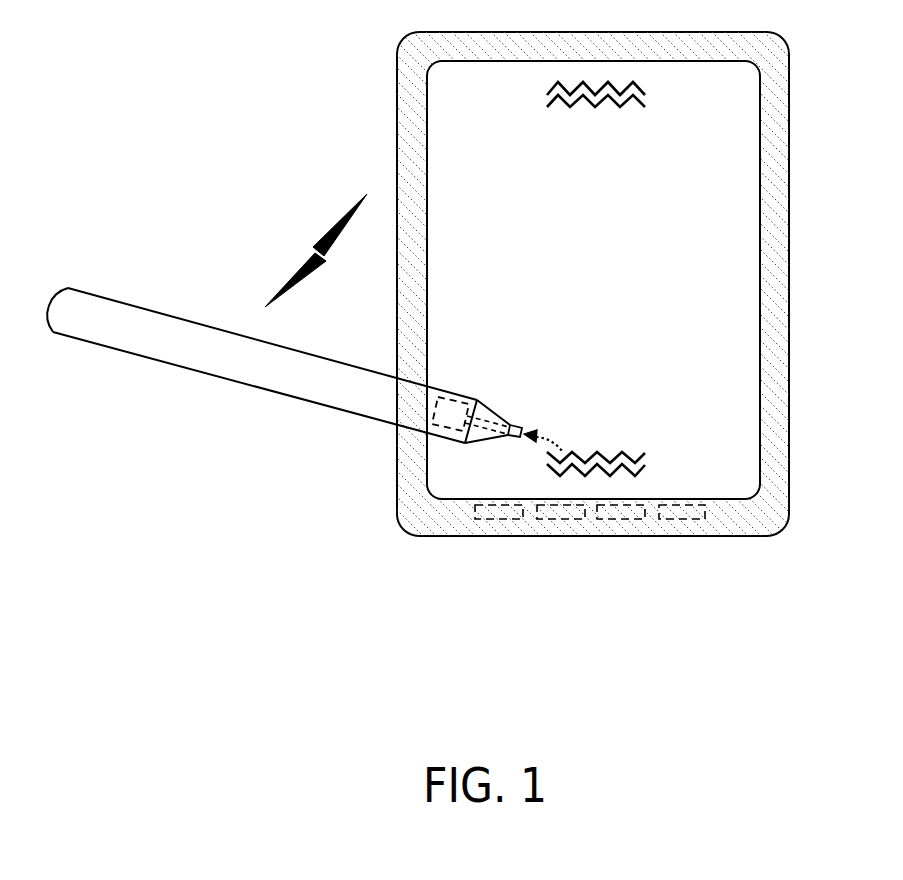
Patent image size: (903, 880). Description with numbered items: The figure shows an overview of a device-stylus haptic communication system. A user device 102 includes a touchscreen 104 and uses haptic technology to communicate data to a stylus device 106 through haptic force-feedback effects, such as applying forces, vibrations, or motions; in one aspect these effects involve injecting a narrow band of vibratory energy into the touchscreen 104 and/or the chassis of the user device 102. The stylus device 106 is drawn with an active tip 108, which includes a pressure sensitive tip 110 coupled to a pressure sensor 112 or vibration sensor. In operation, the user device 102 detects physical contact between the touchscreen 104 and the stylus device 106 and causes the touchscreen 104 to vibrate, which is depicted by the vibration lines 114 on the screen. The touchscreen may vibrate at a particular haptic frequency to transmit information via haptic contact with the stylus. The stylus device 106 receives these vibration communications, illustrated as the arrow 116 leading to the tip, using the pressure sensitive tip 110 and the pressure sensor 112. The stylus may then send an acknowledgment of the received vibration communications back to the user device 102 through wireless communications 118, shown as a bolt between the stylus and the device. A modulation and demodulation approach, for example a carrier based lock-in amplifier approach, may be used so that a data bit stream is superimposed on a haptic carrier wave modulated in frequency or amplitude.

The user device 102 is at (783, 146).
The touchscreen 104 is at (747, 212).
The stylus device 106 is at (165, 322).
The active tip 108 is at (488, 407).
The pressure sensitive tip 110 is at (522, 430).
The pressure sensor 112 is at (442, 397).
The vibration lines 114 is at (568, 104).
The arrow 116 is at (558, 448).
The wireless communications 118 is at (317, 245).